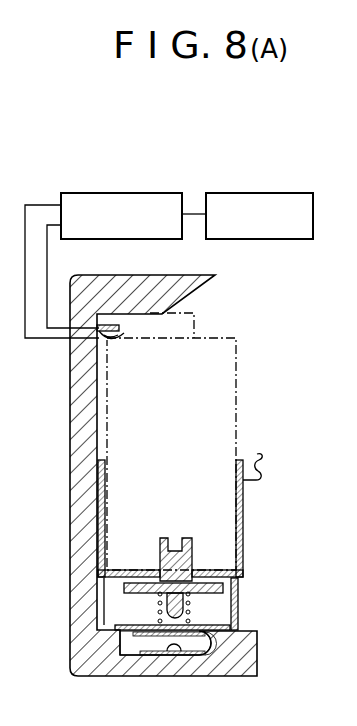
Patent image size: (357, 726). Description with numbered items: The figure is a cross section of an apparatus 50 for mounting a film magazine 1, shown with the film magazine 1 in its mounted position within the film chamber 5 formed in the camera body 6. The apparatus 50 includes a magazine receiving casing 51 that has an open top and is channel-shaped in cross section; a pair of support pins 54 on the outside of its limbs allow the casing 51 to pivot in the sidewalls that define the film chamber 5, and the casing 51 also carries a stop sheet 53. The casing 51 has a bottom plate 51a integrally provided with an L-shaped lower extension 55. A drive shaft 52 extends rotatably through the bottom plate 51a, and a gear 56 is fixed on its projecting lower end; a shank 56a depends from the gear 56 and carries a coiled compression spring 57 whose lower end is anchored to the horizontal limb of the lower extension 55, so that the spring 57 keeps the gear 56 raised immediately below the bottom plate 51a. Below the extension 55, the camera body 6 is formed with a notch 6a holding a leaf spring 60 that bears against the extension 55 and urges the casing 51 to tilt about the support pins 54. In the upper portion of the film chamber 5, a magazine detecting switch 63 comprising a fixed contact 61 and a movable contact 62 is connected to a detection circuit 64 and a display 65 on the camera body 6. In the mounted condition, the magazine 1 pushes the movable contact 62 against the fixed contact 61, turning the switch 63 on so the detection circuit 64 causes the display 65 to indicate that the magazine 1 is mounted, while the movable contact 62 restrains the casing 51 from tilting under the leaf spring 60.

The film magazine 1 is at (238, 360).
The film chamber 5 is at (213, 327).
The camera body 6 is at (83, 553).
The notch 6a is at (128, 652).
The apparatus for mounting a film magazine 50 is at (288, 520).
The magazine receiving casing 51 is at (227, 468).
The bottom plate 51a is at (244, 566).
The drive shaft 52 is at (160, 556).
The stop sheet 53 is at (246, 508).
The support pins 54 is at (226, 566).
The L-shaped lower extension 55 is at (238, 612).
The gear 56 is at (192, 601).
The shank 56a is at (170, 608).
The coiled compression spring 57 is at (191, 606).
The leaf spring 60 is at (178, 656).
The fixed contact 61 is at (118, 328).
The movable contact 62 is at (110, 342).
The magazine detecting switch 63 is at (150, 358).
The detection circuit 64 is at (137, 193).
The display 65 is at (238, 193).